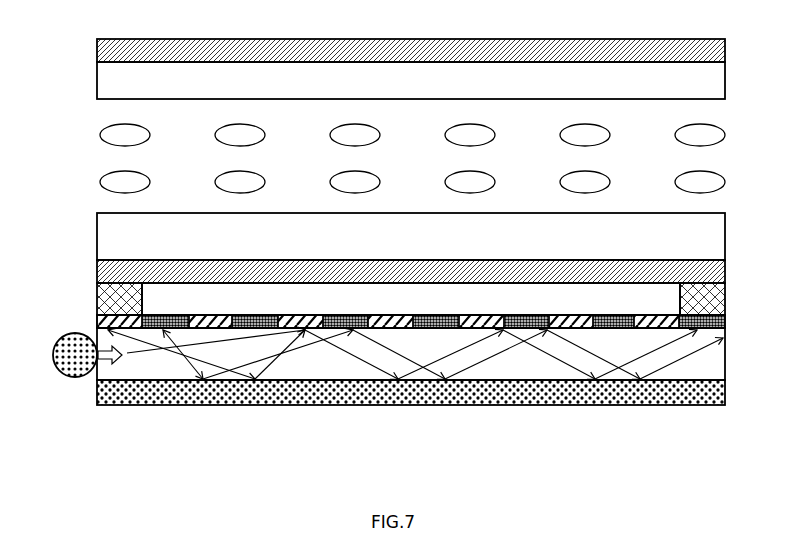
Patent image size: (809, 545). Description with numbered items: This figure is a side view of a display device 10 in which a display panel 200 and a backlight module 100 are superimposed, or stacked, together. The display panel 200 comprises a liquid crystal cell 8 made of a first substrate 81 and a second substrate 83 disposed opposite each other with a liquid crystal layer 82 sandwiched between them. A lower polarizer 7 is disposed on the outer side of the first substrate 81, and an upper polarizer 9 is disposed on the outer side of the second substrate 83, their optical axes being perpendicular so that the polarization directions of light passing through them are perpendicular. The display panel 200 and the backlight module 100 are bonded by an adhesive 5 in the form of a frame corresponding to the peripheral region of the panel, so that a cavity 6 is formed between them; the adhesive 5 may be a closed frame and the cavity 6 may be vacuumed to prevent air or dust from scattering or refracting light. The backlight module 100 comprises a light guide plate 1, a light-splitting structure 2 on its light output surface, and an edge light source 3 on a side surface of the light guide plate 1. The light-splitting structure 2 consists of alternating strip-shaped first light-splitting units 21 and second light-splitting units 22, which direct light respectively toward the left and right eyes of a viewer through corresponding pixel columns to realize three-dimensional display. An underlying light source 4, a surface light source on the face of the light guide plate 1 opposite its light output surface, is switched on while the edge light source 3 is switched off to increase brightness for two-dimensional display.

The display device 10 is at (47, 38).
The upper polarizer 9 is at (165, 52).
The second substrate 83 is at (182, 79).
The liquid crystal cell 8 is at (52, 78).
The liquid crystal layer 82 is at (125, 184).
The first substrate 81 is at (182, 237).
The lower polarizer 7 is at (170, 270).
The adhesive 5 is at (120, 300).
The cavity 6 is at (261, 295).
The display panel 200 is at (725, 39).
The backlight module 100 is at (725, 315).
The light-splitting structure 2 is at (411, 396).
The first light-splitting units 21 is at (530, 320).
The second light-splitting units 22 is at (573, 320).
The light guide plate 1 is at (329, 369).
The underlying light source 4 is at (410, 392).
The edge light source 3 is at (75, 377).